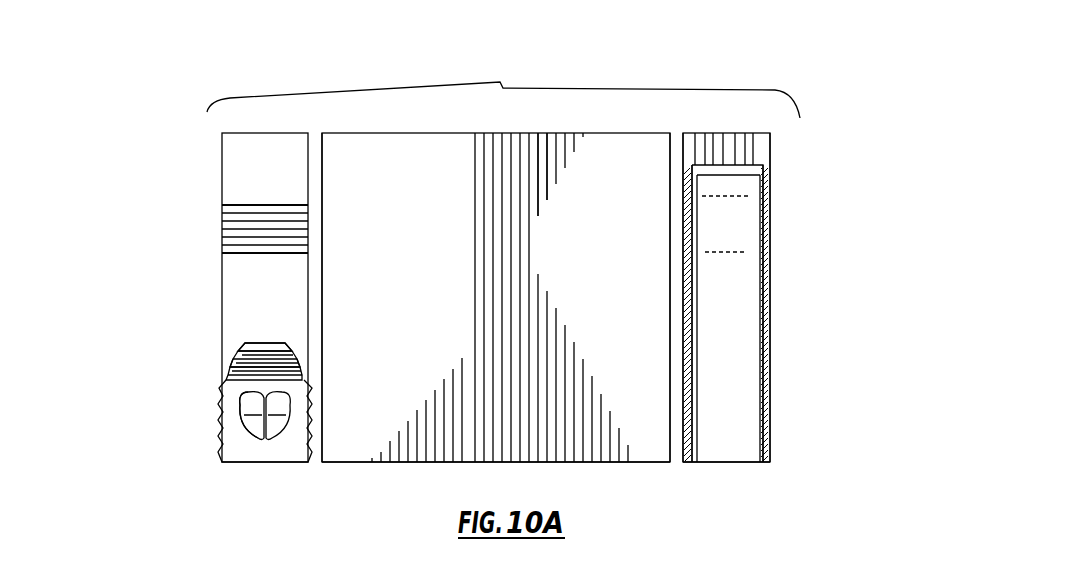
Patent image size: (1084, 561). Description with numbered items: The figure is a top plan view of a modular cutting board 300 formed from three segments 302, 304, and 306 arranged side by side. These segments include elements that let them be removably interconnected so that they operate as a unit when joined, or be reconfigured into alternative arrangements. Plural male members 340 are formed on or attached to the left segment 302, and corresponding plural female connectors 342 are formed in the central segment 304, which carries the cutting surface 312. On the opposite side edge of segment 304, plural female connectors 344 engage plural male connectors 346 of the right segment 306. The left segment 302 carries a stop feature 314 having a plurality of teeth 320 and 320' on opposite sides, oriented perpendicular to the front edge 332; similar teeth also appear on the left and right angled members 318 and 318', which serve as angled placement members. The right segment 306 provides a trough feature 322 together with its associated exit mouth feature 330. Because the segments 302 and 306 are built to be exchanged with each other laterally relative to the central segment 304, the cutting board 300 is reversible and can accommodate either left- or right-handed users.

The cutting board 300 is at (503, 82).
The segment 302 is at (222, 232).
The segment 304 is at (360, 465).
The segment 306 is at (770, 283).
The cutting surface 312 is at (632, 252).
The stop feature 314 is at (257, 285).
The angled member 318 is at (198, 350).
The angled member 318' is at (334, 320).
The plurality of teeth 320 is at (198, 421).
The plurality of teeth 320' is at (340, 405).
The trough feature 322 is at (804, 434).
The exit mouth feature 330 is at (744, 474).
The front edge 332 is at (645, 462).
The male members 340 is at (220, 192).
The female connectors 342 is at (322, 188).
The female connectors 344 is at (680, 183).
The male connectors 346 is at (688, 185).